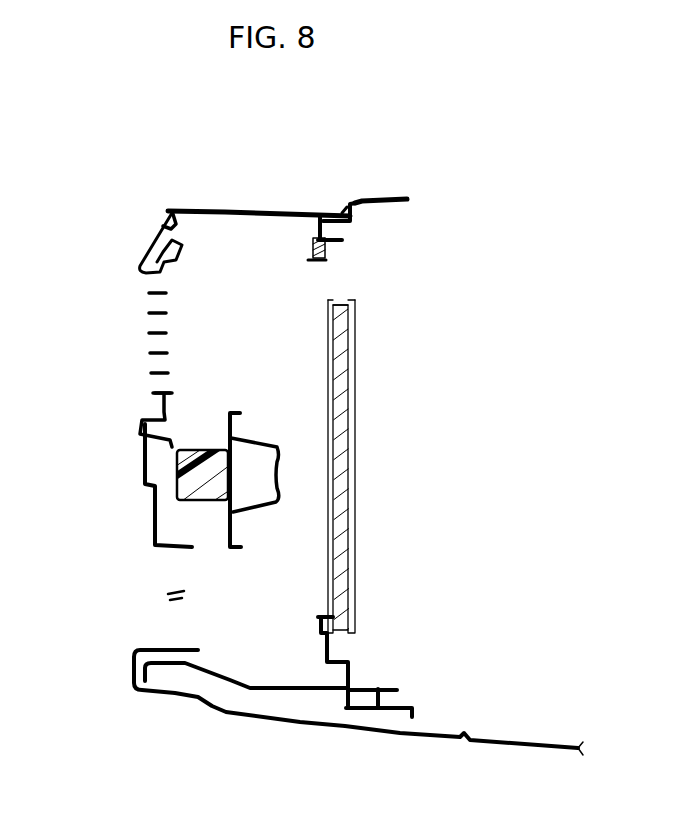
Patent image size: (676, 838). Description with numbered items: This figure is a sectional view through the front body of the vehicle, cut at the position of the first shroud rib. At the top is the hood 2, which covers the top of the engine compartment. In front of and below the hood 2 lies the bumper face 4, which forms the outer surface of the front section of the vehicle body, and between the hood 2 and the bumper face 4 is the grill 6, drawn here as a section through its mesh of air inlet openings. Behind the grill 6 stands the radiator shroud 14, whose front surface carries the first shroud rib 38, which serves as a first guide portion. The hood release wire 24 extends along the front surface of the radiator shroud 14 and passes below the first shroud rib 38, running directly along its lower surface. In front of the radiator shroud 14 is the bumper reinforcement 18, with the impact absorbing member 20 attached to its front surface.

The hood 2 is at (242, 211).
The first shroud rib 38 is at (315, 214).
The radiator shroud 14 is at (372, 207).
The hood release wire 24 is at (316, 243).
The grill 6 is at (134, 338).
The impact absorbing member 20 is at (177, 472).
The bumper face 4 is at (152, 518).
The bumper reinforcement 18 is at (229, 549).